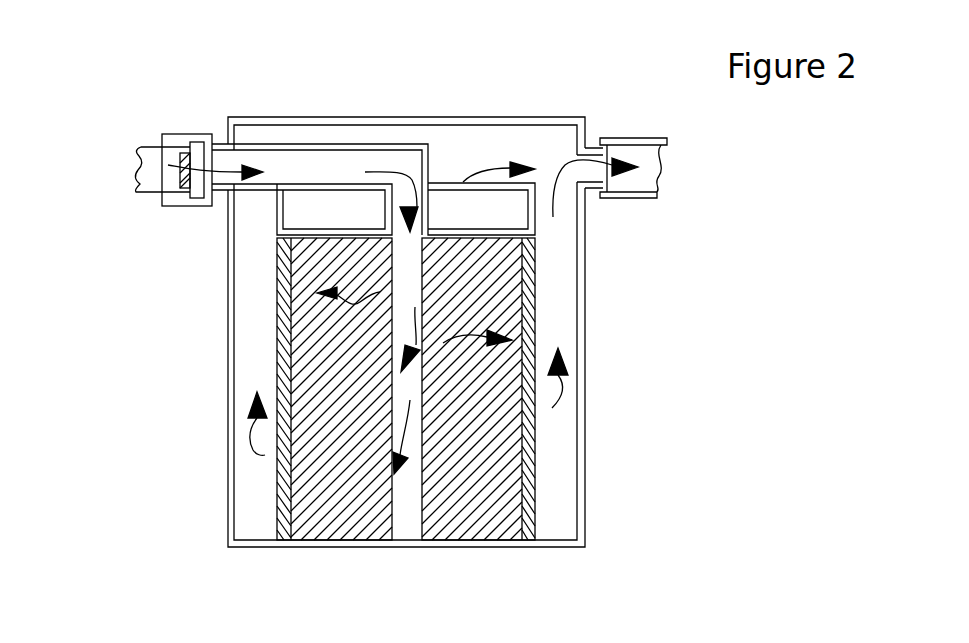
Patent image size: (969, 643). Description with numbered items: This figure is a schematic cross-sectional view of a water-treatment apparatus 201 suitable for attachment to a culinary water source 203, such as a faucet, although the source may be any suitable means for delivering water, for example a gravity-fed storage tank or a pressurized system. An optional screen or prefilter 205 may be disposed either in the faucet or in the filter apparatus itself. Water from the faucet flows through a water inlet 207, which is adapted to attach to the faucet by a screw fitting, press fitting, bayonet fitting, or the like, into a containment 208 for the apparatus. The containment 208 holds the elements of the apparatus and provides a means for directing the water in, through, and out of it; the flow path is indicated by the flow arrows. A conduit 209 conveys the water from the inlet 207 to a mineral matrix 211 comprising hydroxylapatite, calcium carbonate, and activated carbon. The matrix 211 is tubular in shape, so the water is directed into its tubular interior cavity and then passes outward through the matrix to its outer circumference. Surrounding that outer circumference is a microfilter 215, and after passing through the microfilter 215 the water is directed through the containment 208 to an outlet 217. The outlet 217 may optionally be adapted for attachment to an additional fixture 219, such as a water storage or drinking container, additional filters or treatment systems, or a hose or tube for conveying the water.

The apparatus 201 is at (398, 86).
The culinary water source 203 is at (163, 147).
The screen or prefilter 205 is at (186, 168).
The water inlet 207 is at (180, 200).
The containment 208 is at (234, 459).
The conduit 209 is at (413, 167).
The mineral matrix 211 is at (493, 402).
The microfilter 215 is at (530, 518).
The outlet 217 is at (595, 187).
The additional fixture 219 is at (645, 143).